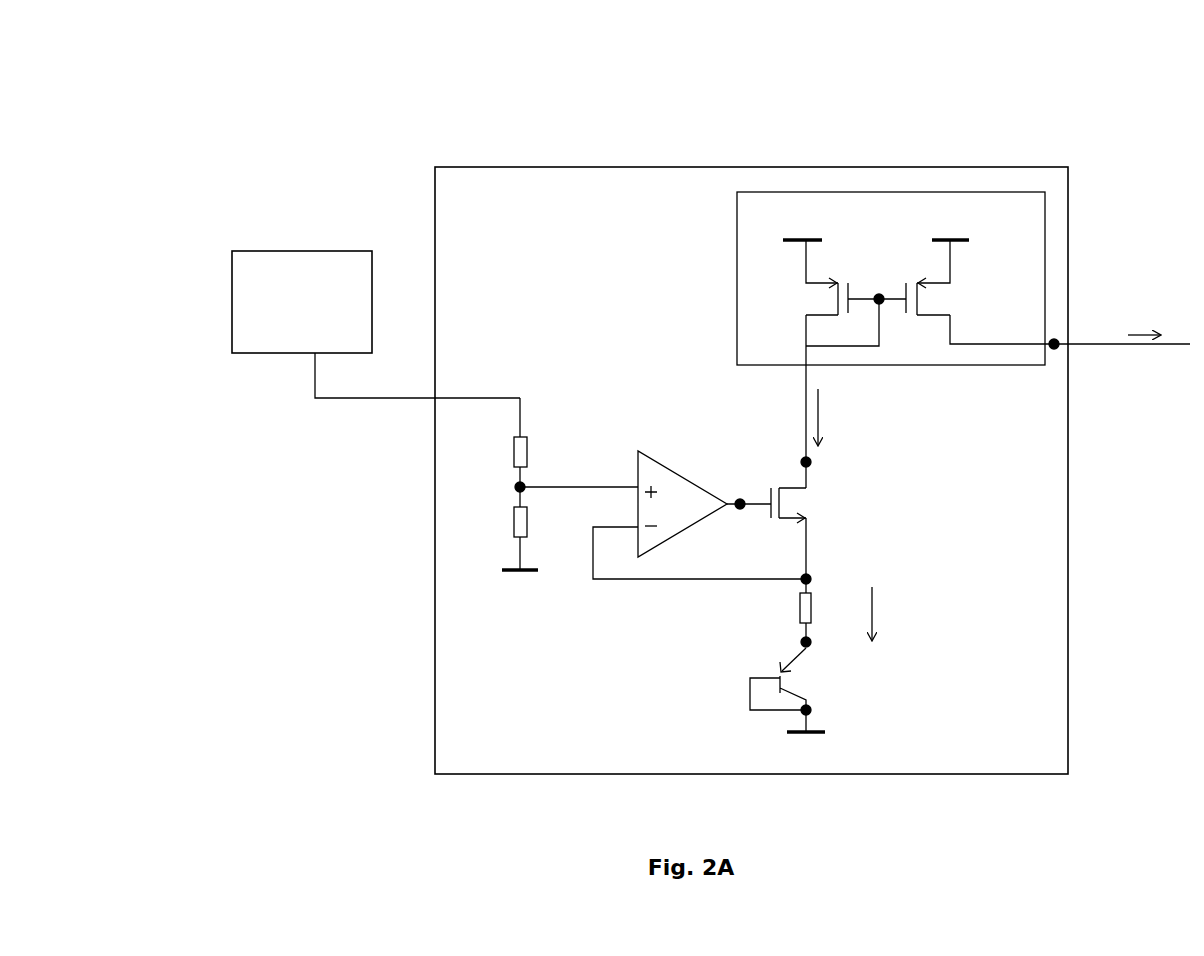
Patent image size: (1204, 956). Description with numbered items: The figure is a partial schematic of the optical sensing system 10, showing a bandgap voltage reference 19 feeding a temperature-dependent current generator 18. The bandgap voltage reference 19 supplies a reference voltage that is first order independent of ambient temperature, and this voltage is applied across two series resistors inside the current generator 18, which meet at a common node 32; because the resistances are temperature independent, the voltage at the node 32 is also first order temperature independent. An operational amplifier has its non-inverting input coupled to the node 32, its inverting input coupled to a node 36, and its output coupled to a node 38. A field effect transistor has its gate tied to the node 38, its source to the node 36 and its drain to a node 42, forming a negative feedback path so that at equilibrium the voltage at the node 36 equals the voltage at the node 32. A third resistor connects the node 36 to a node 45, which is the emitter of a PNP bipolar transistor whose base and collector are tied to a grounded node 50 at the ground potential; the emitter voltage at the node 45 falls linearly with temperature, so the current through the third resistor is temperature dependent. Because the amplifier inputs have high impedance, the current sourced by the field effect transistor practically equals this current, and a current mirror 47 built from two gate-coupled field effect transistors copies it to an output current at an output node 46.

The optical sensing system 10 is at (381, 118).
The current generator 18 is at (688, 167).
The bandgap voltage reference 19 is at (301, 251).
The common node 32 is at (517, 487).
The node 36 is at (809, 579).
The node 38 is at (740, 499).
The node 42 is at (809, 462).
The node 45 is at (802, 642).
The output node 46 is at (1057, 348).
The current mirror 47 is at (937, 365).
The node 50 is at (809, 710).